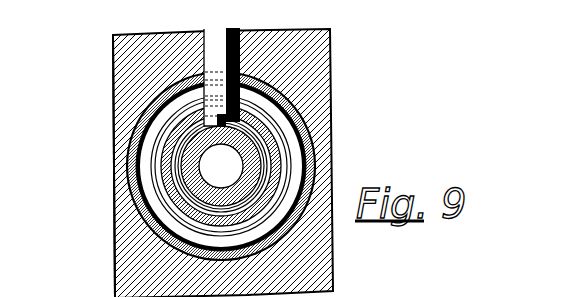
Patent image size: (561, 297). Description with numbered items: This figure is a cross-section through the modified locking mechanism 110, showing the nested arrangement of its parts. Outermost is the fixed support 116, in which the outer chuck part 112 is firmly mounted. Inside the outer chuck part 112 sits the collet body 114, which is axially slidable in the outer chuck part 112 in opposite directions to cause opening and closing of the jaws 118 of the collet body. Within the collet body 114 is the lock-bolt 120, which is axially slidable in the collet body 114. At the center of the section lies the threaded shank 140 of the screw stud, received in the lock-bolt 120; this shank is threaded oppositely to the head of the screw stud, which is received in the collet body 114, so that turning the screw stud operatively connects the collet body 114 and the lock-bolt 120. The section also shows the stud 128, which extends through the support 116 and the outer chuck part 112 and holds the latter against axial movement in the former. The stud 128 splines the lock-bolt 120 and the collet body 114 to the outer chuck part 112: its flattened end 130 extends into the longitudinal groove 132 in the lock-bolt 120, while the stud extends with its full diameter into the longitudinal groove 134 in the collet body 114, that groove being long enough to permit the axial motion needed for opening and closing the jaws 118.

The locking mechanism 110 is at (306, 100).
The outer chuck part 112 is at (150, 205).
The collet body 114 is at (150, 218).
The fixed support 116 is at (318, 52).
The jaws 118 is at (296, 140).
The lock-bolt 120 is at (106, 162).
The stud 128 is at (212, 23).
The flattened end 130 is at (148, 106).
The longitudinal groove 132 is at (298, 120).
The longitudinal groove 134 is at (300, 90).
The threaded shank 140 is at (236, 158).